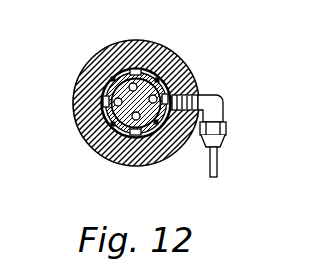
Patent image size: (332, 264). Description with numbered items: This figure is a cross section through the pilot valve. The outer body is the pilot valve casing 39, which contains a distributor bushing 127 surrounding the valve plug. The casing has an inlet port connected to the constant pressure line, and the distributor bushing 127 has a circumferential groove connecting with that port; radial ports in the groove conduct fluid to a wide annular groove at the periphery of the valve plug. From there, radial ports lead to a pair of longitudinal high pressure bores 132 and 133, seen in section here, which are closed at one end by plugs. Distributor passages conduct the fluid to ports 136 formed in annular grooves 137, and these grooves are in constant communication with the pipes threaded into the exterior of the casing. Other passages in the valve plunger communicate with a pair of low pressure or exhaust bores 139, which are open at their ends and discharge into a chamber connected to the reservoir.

The pilot valve casing 39 is at (165, 55).
The distributor bushing 127 is at (115, 97).
The longitudinal high pressure bore 132 is at (113, 75).
The longitudinal high pressure bore 133 is at (102, 155).
The port 136 is at (114, 70).
The annular groove 137 is at (128, 72).
The low pressure or exhaust bore 139 is at (197, 79).